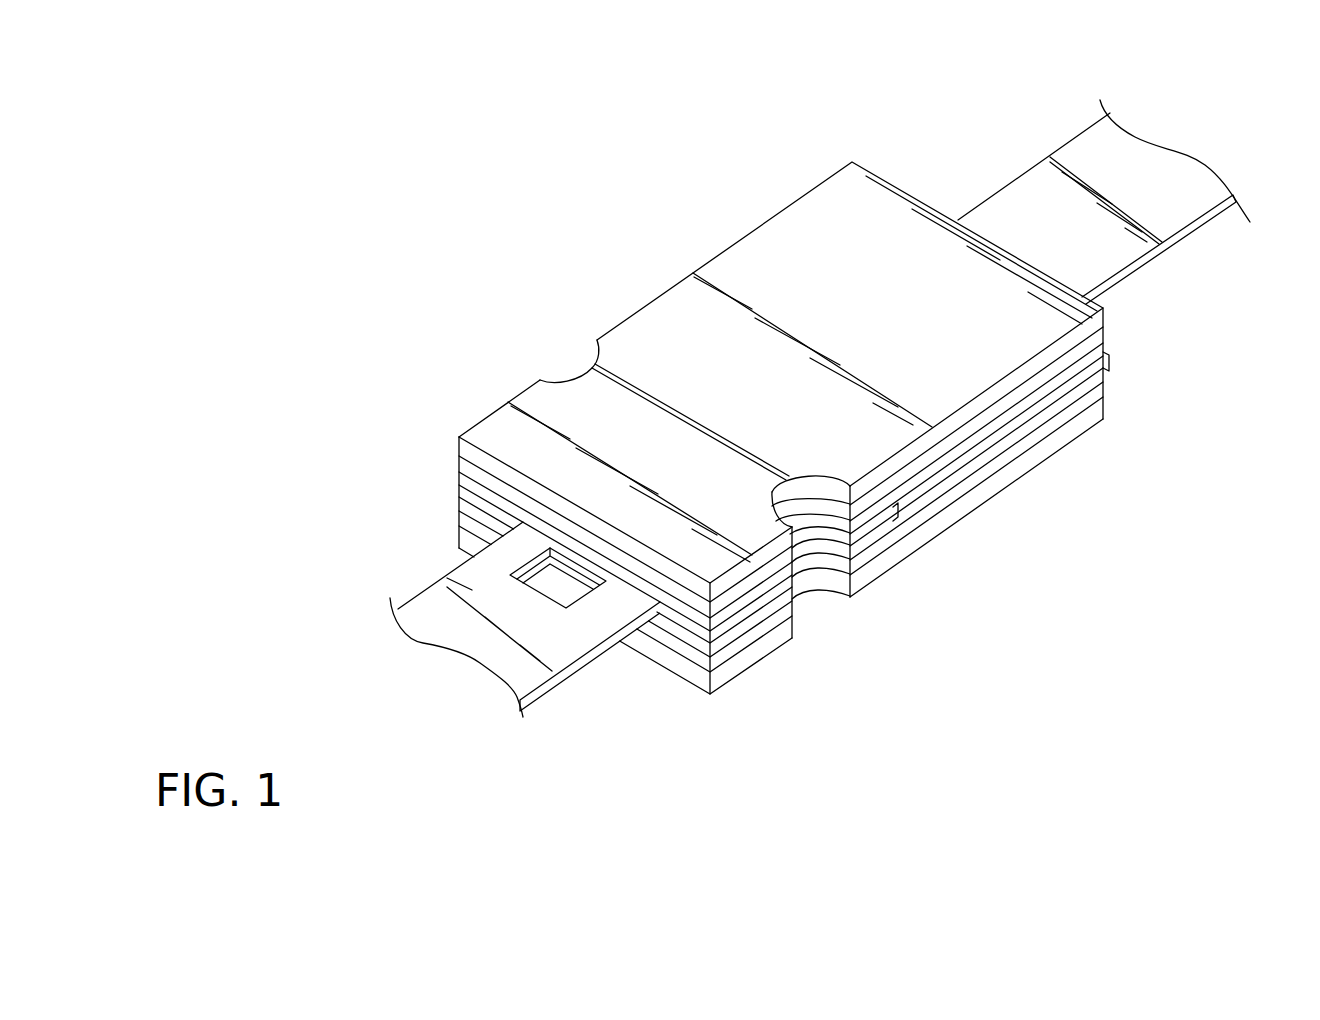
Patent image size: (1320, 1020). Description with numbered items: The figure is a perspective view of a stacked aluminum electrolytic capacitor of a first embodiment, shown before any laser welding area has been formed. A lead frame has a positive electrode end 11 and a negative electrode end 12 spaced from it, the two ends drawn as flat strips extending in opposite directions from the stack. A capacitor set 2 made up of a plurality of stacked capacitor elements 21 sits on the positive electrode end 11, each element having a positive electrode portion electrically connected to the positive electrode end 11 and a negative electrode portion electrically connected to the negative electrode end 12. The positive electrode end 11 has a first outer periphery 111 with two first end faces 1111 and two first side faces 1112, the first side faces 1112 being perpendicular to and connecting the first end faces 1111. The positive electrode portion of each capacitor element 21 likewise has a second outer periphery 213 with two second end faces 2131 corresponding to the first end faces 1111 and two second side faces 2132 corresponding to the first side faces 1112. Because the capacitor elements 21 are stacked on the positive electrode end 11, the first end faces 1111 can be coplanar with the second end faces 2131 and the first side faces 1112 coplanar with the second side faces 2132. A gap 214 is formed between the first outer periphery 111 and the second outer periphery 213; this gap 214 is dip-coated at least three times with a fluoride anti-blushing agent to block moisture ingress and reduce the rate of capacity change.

The capacitor set 2 is at (684, 258).
The stacked capacitor element 21 is at (1093, 320).
The second outer periphery 213 is at (502, 466).
The second end face 2131 is at (467, 468).
The gap 214 is at (468, 493).
The second side face 2132 is at (780, 576).
The positive electrode end 11 is at (428, 570).
The first outer periphery 111 is at (688, 646).
The first end face 1111 is at (665, 613).
The first side face 1112 is at (753, 611).
The negative electrode end 12 is at (1021, 156).